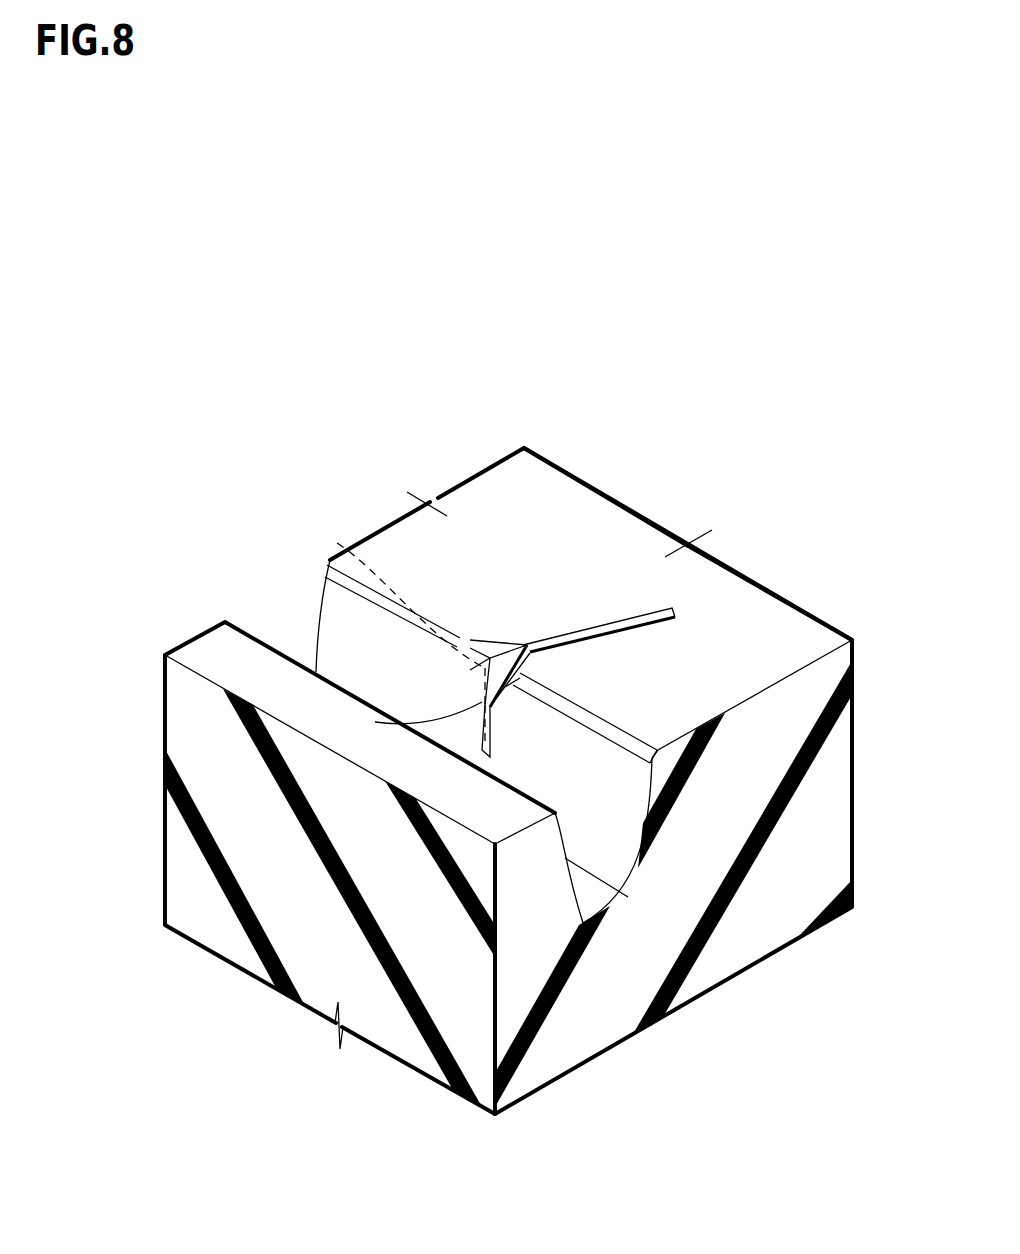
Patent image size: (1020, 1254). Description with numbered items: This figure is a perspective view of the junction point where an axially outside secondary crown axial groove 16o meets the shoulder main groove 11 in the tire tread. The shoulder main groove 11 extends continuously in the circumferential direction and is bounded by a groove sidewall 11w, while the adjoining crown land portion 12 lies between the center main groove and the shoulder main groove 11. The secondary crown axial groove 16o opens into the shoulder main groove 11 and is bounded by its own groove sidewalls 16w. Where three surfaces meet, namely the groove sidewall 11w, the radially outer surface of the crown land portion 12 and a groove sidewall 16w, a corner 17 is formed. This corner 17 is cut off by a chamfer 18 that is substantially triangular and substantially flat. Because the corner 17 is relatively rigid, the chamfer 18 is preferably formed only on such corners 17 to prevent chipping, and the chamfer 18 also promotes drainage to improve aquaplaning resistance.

The crown land portion 12 is at (482, 505).
The shoulder main groove 11 is at (591, 896).
The groove sidewall 11w is at (407, 663).
The groove sidewall 16w is at (407, 727).
The axially outside secondary crown axial groove 16o is at (613, 627).
The corner 17 is at (337, 543).
The chamfer 18 is at (497, 650).